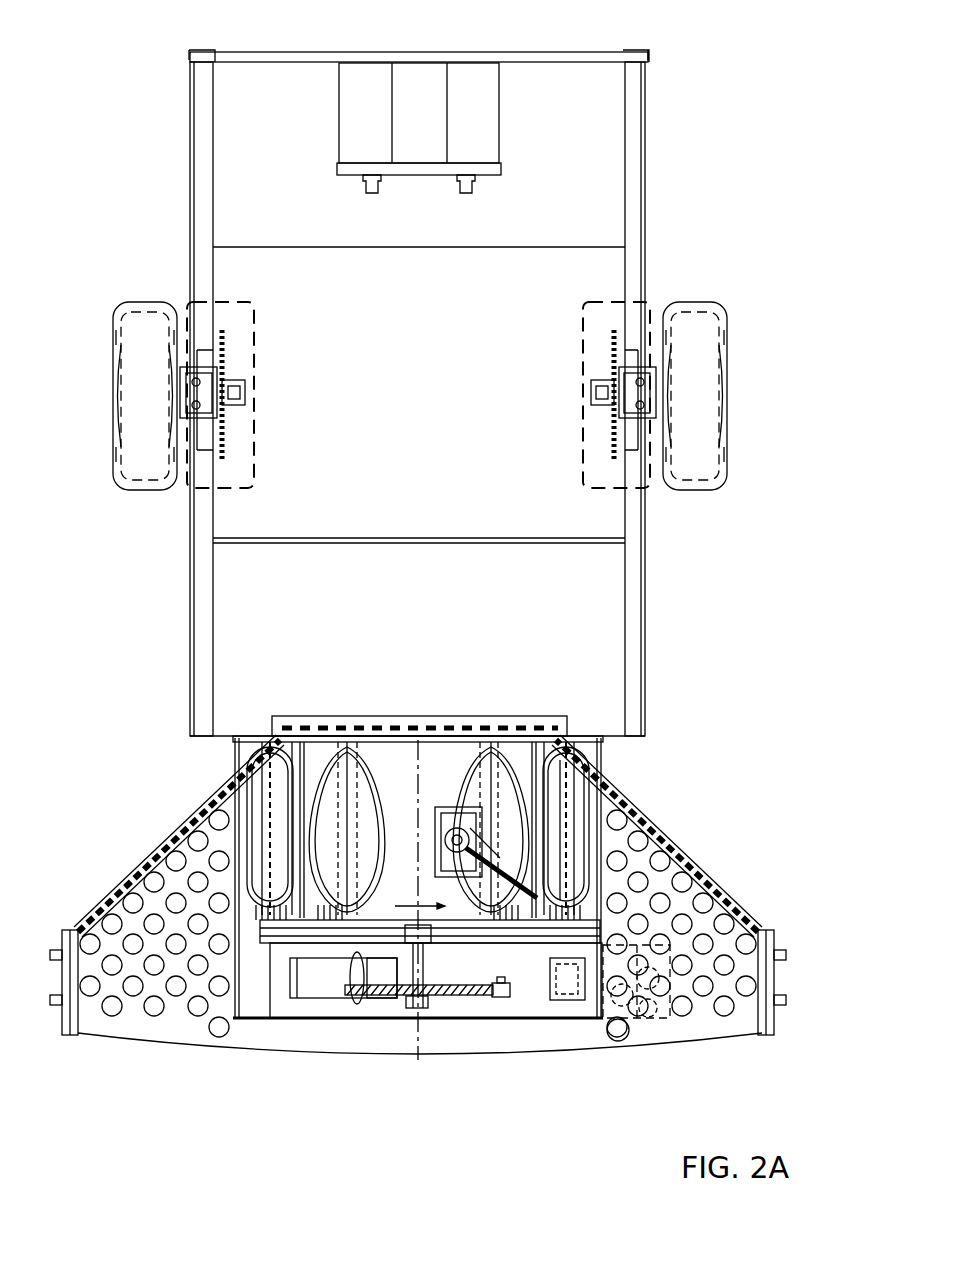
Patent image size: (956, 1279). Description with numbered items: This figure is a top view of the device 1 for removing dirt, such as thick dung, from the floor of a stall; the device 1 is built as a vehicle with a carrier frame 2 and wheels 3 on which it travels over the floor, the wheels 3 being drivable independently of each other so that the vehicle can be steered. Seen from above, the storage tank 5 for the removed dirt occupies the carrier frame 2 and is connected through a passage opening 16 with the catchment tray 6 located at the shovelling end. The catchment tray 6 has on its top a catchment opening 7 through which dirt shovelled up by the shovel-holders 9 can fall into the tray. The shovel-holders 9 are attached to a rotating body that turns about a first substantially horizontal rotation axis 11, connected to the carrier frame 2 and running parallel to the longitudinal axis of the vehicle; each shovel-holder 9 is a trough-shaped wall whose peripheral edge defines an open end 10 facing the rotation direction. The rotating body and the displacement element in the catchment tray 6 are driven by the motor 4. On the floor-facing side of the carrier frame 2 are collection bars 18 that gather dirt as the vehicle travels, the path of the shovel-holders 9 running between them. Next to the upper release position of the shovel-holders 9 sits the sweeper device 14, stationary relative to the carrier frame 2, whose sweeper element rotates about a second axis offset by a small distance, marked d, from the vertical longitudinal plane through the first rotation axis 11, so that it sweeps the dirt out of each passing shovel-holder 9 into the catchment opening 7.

The device 1 is at (670, 121).
The carrier frame 2 is at (193, 617).
The wheels 3 is at (147, 320).
The motor 4 is at (312, 985).
The storage tank 5 is at (225, 165).
The catchment tray 6 is at (315, 892).
The catchment opening 7 is at (214, 795).
The shovel-holders 9 is at (547, 818).
The open end 10 is at (263, 853).
The first rotation axis 11 is at (420, 1052).
The sweeper device 14 is at (523, 745).
The passage opening 16 is at (402, 738).
The collection bars 18 is at (115, 899).